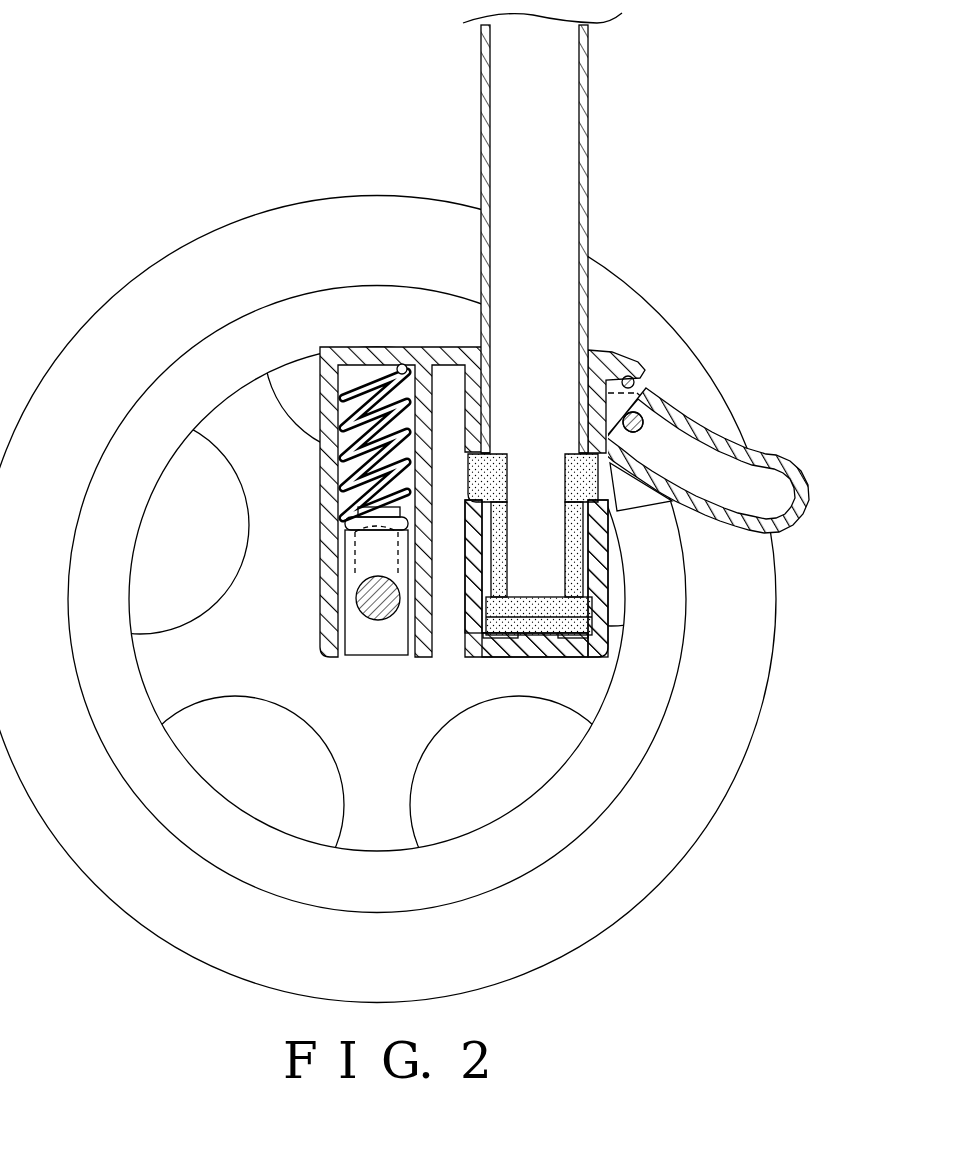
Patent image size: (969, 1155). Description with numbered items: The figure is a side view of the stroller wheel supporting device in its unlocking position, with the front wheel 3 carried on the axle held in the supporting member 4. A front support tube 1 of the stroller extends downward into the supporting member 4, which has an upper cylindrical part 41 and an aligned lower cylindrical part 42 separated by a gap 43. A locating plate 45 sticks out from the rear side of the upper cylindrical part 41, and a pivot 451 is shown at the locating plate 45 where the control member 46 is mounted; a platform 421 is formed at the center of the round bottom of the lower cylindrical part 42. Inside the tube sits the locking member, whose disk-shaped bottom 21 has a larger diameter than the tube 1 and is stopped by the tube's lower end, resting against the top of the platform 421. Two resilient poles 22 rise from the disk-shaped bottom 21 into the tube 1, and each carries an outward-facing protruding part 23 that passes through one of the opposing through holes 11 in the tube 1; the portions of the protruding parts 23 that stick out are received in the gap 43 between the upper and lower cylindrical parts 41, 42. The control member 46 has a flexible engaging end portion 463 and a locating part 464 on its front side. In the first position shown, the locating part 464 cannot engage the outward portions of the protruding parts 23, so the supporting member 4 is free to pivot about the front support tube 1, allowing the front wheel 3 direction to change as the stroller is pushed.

The front support tube 1 is at (588, 147).
The through hole 11 is at (490, 452).
The wheel 3 is at (205, 253).
The supporting member 4 is at (558, 450).
The upper cylindrical part 41 is at (625, 357).
The lower cylindrical part 42 is at (612, 578).
The platform 421 is at (585, 655).
The gap 43 is at (467, 483).
The locating plate 45 is at (640, 377).
The pivot pin 451 is at (642, 415).
The engaging end portion 463 is at (633, 422).
The control member 46 is at (733, 487).
The locating part 464 is at (633, 497).
The disk-shaped bottom 21 is at (497, 634).
The pole 22 is at (498, 556).
The protruding part 23 is at (470, 460).